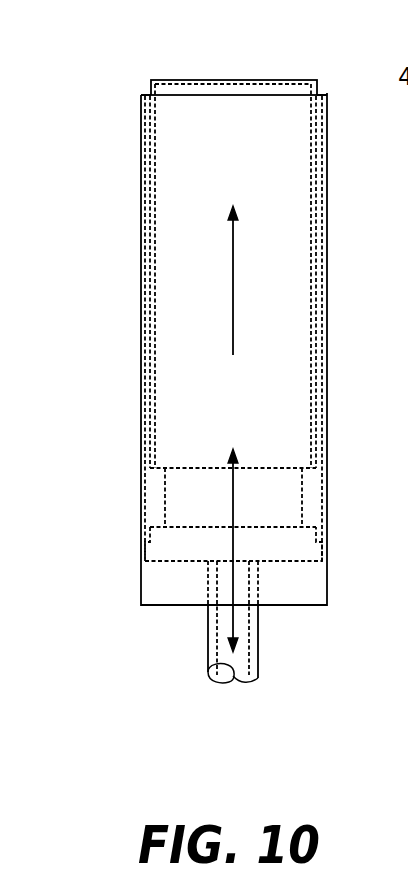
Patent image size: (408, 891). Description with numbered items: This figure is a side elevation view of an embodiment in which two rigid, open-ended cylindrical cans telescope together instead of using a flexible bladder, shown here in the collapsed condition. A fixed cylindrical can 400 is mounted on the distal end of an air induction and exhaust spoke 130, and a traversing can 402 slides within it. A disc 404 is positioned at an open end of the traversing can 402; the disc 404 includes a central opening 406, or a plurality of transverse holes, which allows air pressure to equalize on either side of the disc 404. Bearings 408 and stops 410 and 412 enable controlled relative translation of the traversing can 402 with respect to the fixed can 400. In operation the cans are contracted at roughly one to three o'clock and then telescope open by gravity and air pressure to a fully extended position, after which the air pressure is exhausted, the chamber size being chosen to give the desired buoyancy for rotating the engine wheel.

The fixed cylindrical can 400 is at (327, 190).
The traversing can 402 is at (236, 80).
The disc 404 is at (305, 518).
The central opening 406 is at (240, 505).
The bearings 408 is at (145, 490).
The stop 410 is at (145, 101).
The stop 412 is at (148, 537).
The air induction and exhaust spoke 130 is at (238, 667).